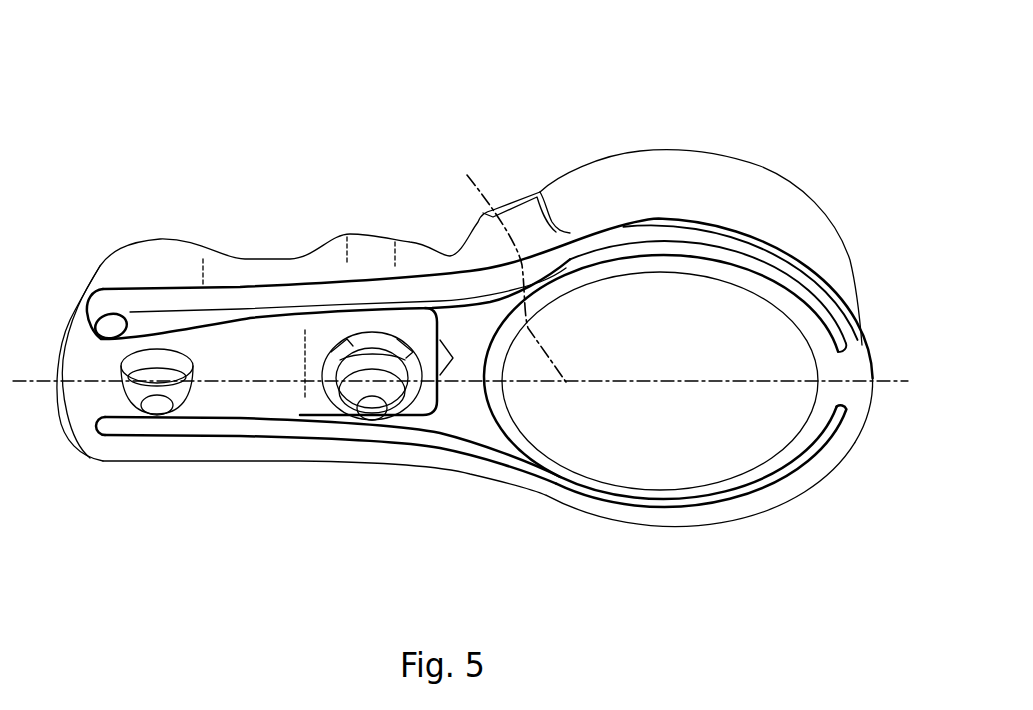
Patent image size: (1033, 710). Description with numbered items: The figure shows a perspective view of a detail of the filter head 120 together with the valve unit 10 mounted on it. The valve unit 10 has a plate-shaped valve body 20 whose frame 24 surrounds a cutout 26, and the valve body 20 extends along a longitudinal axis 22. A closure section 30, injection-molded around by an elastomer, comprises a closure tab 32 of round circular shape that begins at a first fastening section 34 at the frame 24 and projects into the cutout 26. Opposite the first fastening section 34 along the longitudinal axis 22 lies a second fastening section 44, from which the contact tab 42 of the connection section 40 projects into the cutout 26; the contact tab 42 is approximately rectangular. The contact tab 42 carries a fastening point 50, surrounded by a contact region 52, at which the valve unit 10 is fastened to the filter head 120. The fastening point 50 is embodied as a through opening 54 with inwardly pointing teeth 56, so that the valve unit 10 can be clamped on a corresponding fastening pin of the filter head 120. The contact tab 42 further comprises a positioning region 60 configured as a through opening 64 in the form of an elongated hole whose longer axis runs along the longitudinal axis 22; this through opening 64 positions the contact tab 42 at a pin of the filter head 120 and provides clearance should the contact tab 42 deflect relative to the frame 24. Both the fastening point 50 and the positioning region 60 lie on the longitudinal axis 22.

The valve unit 10 is at (223, 203).
The valve body 20 is at (268, 289).
The longitudinal axis 22 is at (504, 254).
The frame 24 is at (662, 527).
The cutout 26 is at (480, 366).
The closure section 30 is at (685, 345).
The closure tab 32 is at (548, 473).
The first fastening section 34 is at (848, 371).
The connection section 40 is at (257, 365).
The contact tab 42 is at (247, 418).
The second fastening section 44 is at (81, 372).
The fastening point 50 is at (413, 387).
The contact region 52 is at (318, 399).
The through opening 54 is at (413, 387).
The teeth 56 is at (397, 357).
The positioning region 60 is at (125, 347).
The through opening 64 is at (122, 382).
The filter head 120 is at (780, 167).